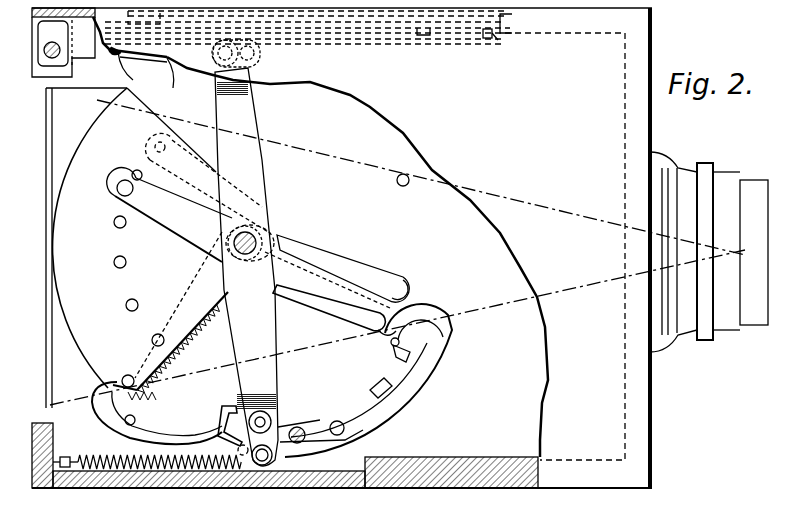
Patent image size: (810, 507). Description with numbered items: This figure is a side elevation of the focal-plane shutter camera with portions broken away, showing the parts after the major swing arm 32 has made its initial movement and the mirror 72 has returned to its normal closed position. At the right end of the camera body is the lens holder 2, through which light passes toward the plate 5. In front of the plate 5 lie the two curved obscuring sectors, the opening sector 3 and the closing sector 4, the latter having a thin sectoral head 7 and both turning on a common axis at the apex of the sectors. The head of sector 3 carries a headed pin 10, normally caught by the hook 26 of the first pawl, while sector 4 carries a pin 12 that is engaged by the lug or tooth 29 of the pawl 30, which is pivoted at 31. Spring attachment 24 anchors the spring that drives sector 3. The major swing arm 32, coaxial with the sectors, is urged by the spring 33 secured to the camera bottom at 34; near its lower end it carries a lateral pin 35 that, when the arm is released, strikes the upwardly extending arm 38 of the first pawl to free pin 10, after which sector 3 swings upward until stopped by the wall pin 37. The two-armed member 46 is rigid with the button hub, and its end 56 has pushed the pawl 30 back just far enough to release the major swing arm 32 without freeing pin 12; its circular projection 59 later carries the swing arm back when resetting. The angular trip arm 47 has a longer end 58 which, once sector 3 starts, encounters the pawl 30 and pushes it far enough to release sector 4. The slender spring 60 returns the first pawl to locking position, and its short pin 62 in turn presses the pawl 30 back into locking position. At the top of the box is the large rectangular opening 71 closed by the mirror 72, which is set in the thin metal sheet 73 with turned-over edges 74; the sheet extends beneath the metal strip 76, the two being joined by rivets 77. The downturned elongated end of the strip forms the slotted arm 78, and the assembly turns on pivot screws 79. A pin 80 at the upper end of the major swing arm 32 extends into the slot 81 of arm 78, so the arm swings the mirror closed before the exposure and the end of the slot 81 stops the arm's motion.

The lens holder 2 is at (725, 172).
The opening sector 3 is at (140, 239).
The closing sector 4 is at (360, 381).
The plate 5 is at (46, 280).
The sectoral head 7 is at (377, 257).
The headed pin 10 is at (127, 375).
The pin 12 is at (391, 344).
The spring attachment 24 is at (246, 465).
The hook 26 is at (100, 392).
The lug or tooth 29 is at (393, 353).
The pawl 30 is at (393, 397).
The pivot 31 is at (345, 430).
The major swing arm 32 is at (246, 267).
The spring 33 is at (110, 459).
The spring attachment 34 is at (66, 457).
The lateral pin 35 is at (272, 418).
The pin 37 is at (402, 186).
The upwardly extending arm 38 is at (220, 422).
The two-armed member 46 is at (280, 272).
The angular member or trip arm 47 is at (370, 274).
The end of arm 46 56 is at (374, 329).
The end of trip arm 58 is at (403, 283).
The circular projection 59 is at (117, 188).
The slender spring 60 is at (158, 402).
The short pin 62 is at (306, 440).
The rectangular opening 71 is at (503, 20).
The mirror 72 is at (423, 35).
The thin metal sheet 73 is at (497, 38).
The turned-over edges 74 is at (487, 38).
The metal strip 76 is at (122, 39).
The rivets 77 is at (246, 256).
The slotted arm 78 is at (164, 84).
The pivot screws 79 is at (56, 56).
The pin 80 is at (224, 58).
The slot 81 is at (137, 72).